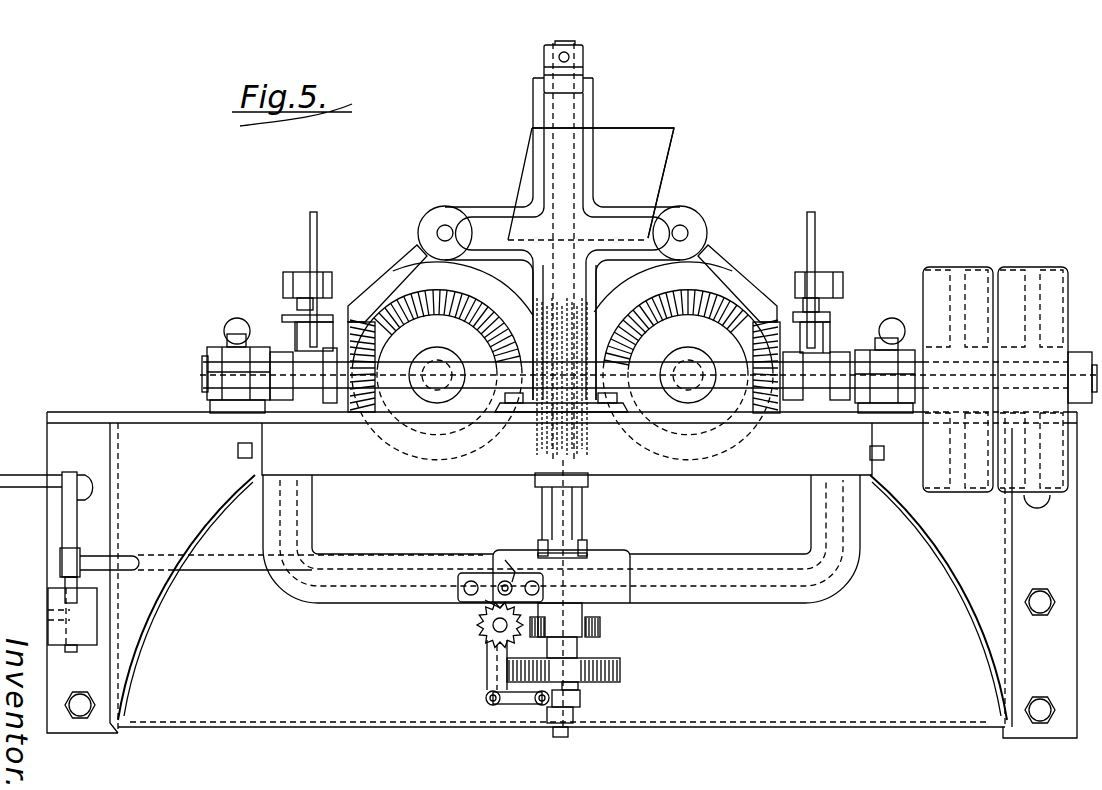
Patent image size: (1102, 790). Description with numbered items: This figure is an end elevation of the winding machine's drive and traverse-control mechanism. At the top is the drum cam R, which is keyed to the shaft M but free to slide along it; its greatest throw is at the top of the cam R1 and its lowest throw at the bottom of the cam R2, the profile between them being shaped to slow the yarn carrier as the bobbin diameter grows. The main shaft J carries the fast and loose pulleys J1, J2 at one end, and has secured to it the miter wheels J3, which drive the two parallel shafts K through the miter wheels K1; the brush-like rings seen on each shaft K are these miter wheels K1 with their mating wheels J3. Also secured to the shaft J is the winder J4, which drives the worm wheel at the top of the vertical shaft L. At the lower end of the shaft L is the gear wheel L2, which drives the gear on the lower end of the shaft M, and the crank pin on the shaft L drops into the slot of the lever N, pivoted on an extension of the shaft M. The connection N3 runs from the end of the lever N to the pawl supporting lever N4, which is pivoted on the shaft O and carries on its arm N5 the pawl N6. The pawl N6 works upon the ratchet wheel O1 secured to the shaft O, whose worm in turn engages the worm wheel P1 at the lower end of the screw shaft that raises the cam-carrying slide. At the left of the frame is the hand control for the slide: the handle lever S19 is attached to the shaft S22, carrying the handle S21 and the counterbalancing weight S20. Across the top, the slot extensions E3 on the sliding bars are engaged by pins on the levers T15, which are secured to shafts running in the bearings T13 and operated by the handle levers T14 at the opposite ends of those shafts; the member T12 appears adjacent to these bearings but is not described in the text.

The drum cam R is at (562, 250).
The top of the drum cam R1 is at (648, 240).
The bottom of the drum cam R2 is at (650, 123).
The slot extension E3 is at (318, 213).
The bearing bracket T12 is at (300, 325).
The bearing T13 is at (257, 327).
The handle lever T14 is at (224, 331).
The lever T15 is at (297, 270).
The shaft J is at (650, 377).
The fast pulley J1 is at (1042, 259).
The loose pulley J2 is at (967, 261).
The miter wheel J3 is at (360, 320).
The winder J4 is at (582, 296).
The parallel shaft K is at (423, 365).
The miter wheel K1 is at (476, 300).
The handle lever S19 is at (65, 592).
The counterbalancing weight S20 is at (76, 620).
The handle S21 is at (18, 486).
The shaft S22 is at (238, 562).
The shaft L is at (561, 595).
The gear wheel L2 is at (620, 674).
The lever N is at (574, 716).
The connection N3 is at (513, 708).
The pawl supporting lever N4 is at (490, 667).
The arm N5 is at (490, 595).
The pawl N6 is at (530, 580).
The shaft O is at (495, 627).
The ratchet wheel O1 is at (484, 612).
The worm wheel P1 is at (598, 632).
The shaft M is at (560, 738).